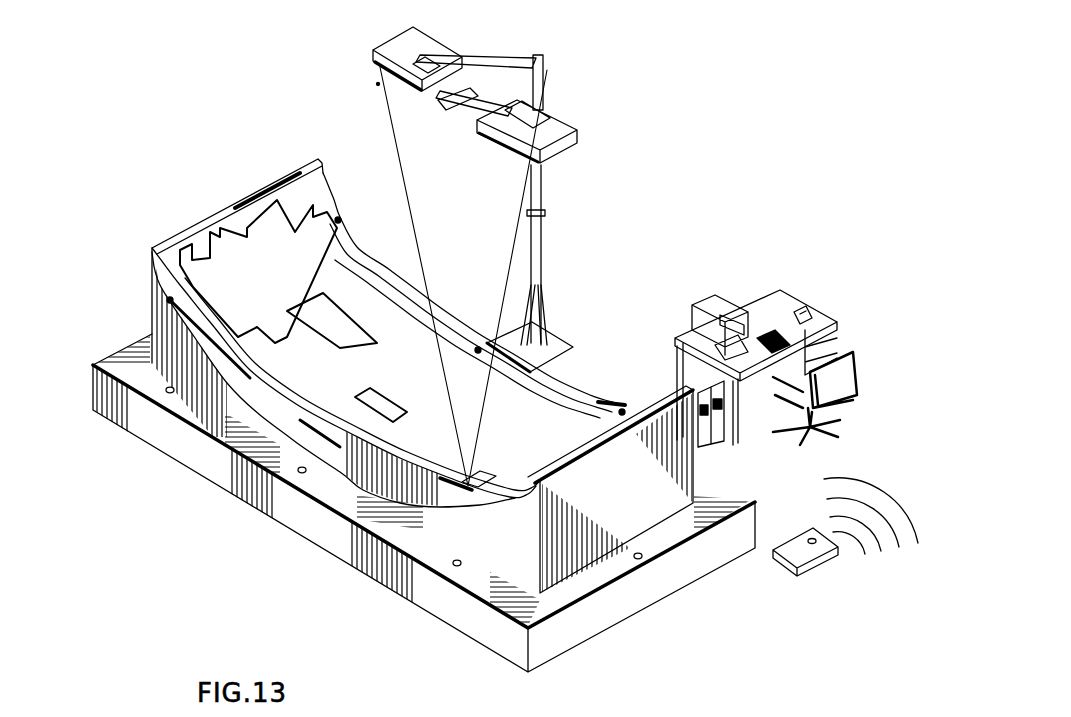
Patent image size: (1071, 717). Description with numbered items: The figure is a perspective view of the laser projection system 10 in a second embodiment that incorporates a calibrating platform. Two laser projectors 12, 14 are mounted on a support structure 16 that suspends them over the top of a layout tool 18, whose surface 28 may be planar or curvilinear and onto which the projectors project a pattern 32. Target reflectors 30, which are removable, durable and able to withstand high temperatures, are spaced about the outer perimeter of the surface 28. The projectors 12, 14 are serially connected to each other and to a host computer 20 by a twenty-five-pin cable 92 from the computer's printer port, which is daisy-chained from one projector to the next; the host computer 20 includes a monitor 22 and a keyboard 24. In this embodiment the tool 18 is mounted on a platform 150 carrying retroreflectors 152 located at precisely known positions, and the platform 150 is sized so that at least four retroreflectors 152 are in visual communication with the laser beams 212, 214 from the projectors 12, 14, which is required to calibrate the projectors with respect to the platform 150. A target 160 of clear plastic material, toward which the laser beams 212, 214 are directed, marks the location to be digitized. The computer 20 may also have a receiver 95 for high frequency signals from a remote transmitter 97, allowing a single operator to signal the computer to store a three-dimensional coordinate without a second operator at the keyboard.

The laser projection system 10 is at (570, 236).
The laser projector 12 is at (410, 42).
The laser projector 14 is at (568, 146).
The support structure 16 is at (541, 57).
The layout tool 18 is at (657, 510).
The host computer 20 is at (713, 447).
The monitor 22 is at (760, 298).
The keyboard 24 is at (775, 333).
The surface 28 is at (167, 268).
The target reflectors 30 is at (237, 212).
The pattern 32 is at (250, 370).
The 25-pin cable 92 is at (595, 373).
The receiver 95 is at (815, 327).
The remote transmitter 97 is at (820, 560).
The platform 150 is at (567, 657).
The retroreflectors 152 is at (170, 393).
The target 160 is at (480, 467).
The laser beam 212 is at (378, 83).
The laser beam 214 is at (523, 323).